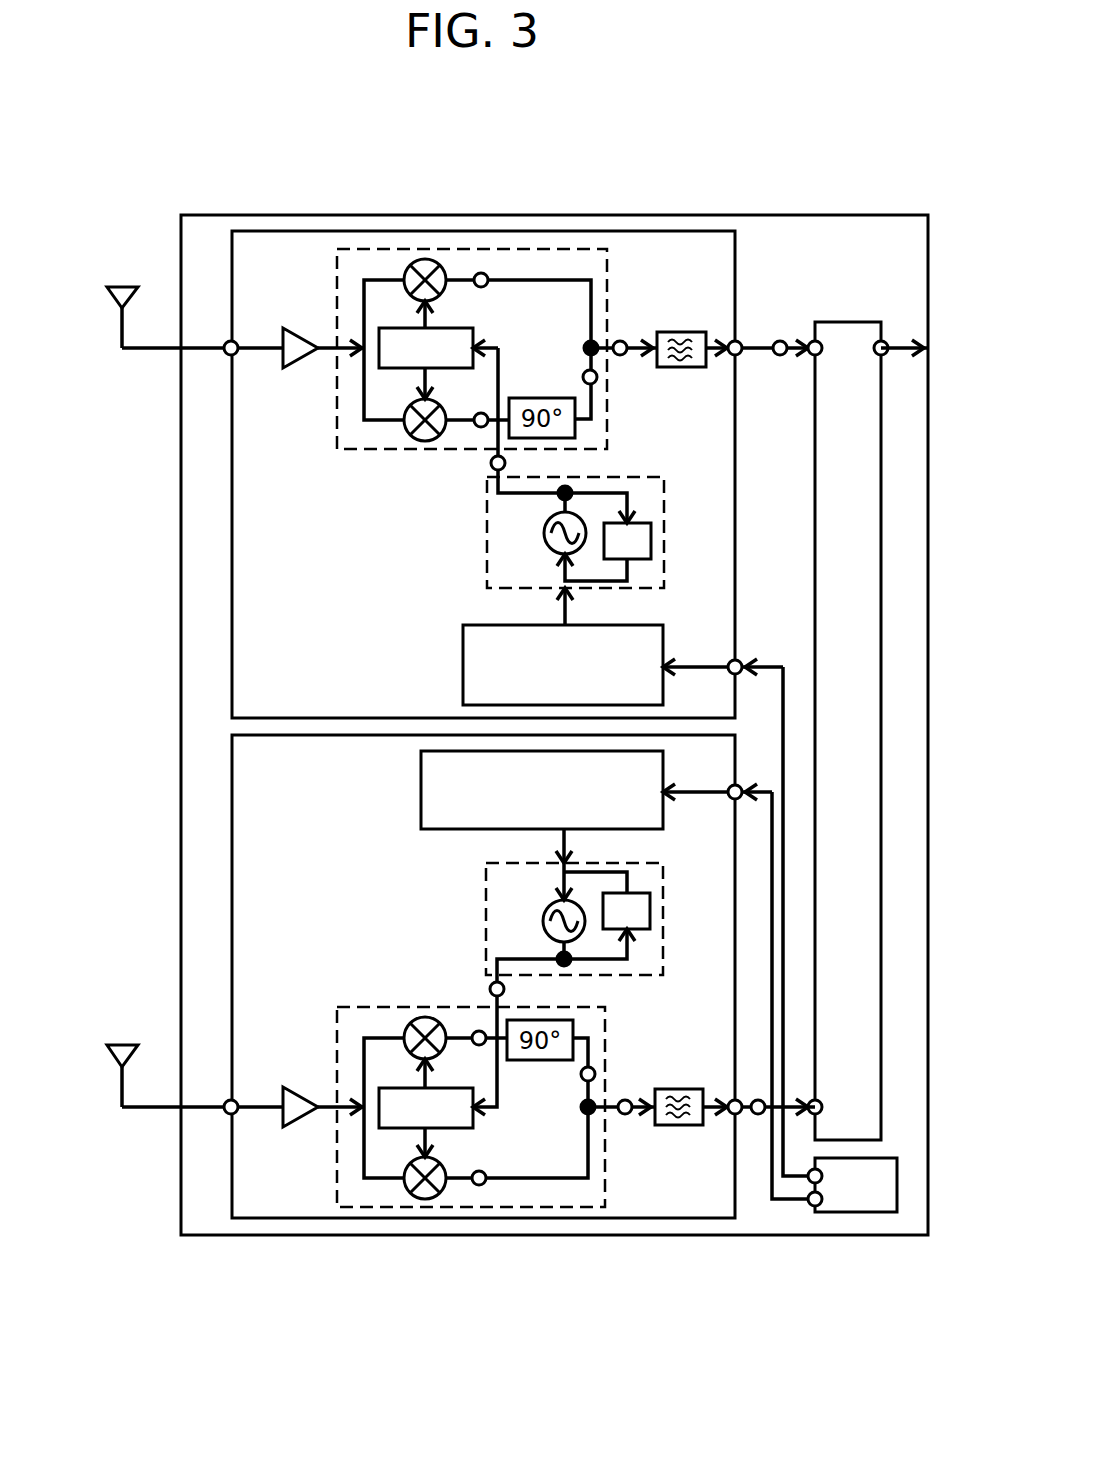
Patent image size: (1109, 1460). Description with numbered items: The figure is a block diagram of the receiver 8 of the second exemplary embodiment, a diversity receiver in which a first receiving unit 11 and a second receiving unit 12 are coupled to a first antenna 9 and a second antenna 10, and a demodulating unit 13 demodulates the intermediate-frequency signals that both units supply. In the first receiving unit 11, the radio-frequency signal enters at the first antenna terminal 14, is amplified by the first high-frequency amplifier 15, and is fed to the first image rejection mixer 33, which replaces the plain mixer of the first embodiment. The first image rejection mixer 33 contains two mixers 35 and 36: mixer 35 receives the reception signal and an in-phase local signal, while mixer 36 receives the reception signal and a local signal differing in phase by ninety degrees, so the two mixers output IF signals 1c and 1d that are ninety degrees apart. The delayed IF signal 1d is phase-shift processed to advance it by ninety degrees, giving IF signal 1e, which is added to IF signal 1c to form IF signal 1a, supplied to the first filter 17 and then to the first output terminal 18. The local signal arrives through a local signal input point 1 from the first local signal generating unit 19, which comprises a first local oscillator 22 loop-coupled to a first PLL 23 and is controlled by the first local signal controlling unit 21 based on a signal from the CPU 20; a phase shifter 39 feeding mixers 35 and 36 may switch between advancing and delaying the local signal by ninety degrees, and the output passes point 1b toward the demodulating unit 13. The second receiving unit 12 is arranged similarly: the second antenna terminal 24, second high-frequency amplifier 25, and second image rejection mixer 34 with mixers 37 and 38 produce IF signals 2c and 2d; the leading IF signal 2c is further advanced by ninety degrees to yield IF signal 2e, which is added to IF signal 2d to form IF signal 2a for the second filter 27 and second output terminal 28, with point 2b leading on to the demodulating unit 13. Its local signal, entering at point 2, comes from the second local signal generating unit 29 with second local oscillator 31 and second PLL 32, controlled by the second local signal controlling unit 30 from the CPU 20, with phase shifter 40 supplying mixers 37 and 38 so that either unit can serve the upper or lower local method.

The receiver 8 is at (163, 193).
The first antenna 9 is at (122, 285).
The second antenna 10 is at (121, 1040).
The first receiving unit 11 is at (232, 593).
The second receiving unit 12 is at (232, 858).
The demodulating unit 13 is at (847, 322).
The first antenna terminal 14 is at (230, 340).
The first high-frequency amplifier 15 is at (299, 337).
The first filter 17 is at (678, 332).
The first output terminal 18 is at (742, 357).
The first local signal generating unit 19 is at (644, 477).
The CPU 20 is at (860, 1213).
The first local signal controlling unit 21 is at (463, 662).
The first local oscillator 22 is at (543, 535).
The first PLL 23 is at (652, 541).
The second antenna terminal 24 is at (230, 1115).
The second high-frequency amplifier 25 is at (300, 1118).
The second filter 27 is at (684, 1089).
The second output terminal 28 is at (729, 1113).
The second local signal generating unit 29 is at (640, 930).
The second local signal controlling unit 30 is at (421, 789).
The second local oscillator 31 is at (483, 886).
The second PLL 32 is at (542, 921).
The first image rejection mixer 33 is at (358, 249).
The second image rejection mixer 34 is at (362, 1208).
The mixer 35 is at (421, 259).
The mixer 36 is at (402, 429).
The mixer 37 is at (402, 1028).
The mixer 38 is at (420, 1200).
The phase shifter 39 is at (377, 357).
The phase shifter 40 is at (377, 1098).
The first local signal input terminal 1 is at (492, 468).
The IF signal 1a is at (622, 340).
The first output connection terminal 1b is at (781, 340).
The IF signal 1c is at (479, 272).
The IF signal 1d is at (475, 428).
The IF signal 1e is at (588, 369).
The second local signal input terminal 2 is at (490, 987).
The IF signal 2a is at (628, 1115).
The second output connection terminal 2b is at (760, 1115).
The IF signal 2c is at (482, 1046).
The IF signal 2d is at (477, 1186).
The IF signal 2e is at (590, 1082).